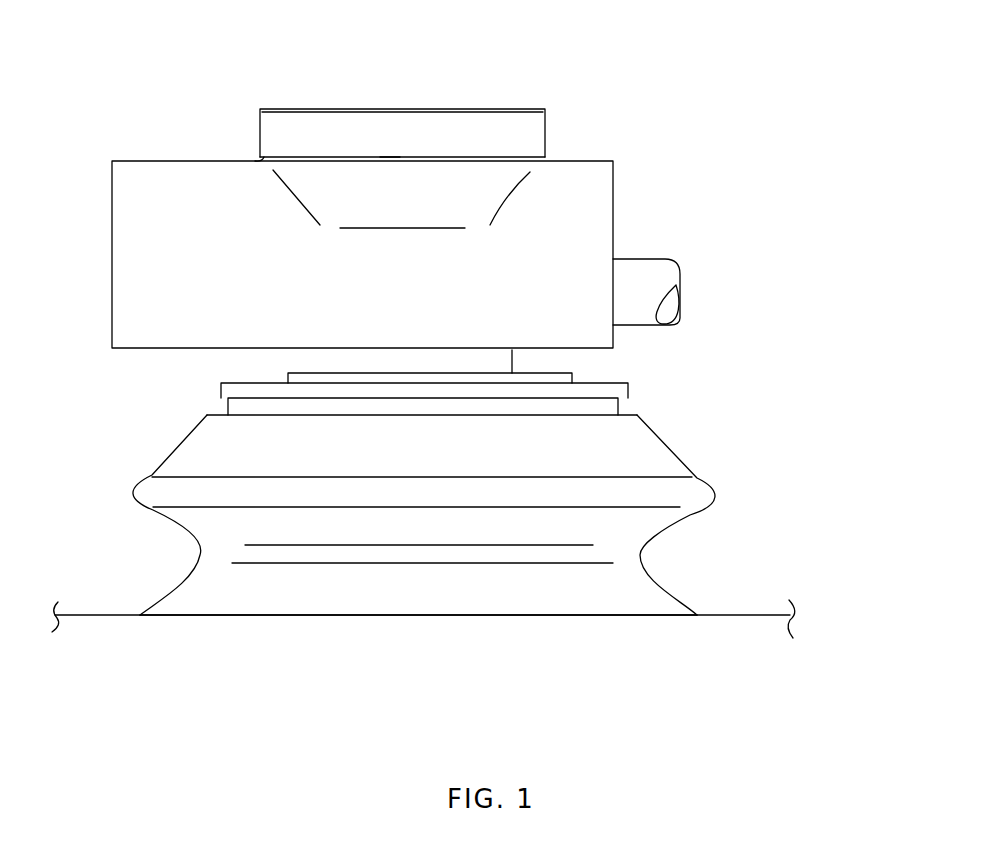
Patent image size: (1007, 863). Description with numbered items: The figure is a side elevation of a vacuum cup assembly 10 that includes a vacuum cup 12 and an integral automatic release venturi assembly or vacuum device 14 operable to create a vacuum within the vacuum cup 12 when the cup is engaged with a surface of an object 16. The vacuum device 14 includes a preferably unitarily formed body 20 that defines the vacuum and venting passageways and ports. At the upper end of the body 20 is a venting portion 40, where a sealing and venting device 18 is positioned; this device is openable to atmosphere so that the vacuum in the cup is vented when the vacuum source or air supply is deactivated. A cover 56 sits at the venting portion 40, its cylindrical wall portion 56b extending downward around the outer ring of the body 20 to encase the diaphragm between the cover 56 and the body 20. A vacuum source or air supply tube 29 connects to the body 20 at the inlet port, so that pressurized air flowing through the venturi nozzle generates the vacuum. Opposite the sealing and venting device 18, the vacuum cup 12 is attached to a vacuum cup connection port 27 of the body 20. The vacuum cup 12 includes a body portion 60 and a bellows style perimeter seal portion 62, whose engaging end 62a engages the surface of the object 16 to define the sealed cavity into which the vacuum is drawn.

The vacuum cup assembly 10 is at (614, 78).
The vacuum cup 12 is at (690, 443).
The vacuum device 14 is at (155, 150).
The object 16 is at (90, 617).
The sealing and venting device 18 is at (428, 97).
The body portion 20 is at (570, 172).
The vacuum cup connection port 27 is at (500, 360).
The air supply tube 29 is at (645, 262).
The venting portion 40 is at (252, 150).
The cover 56 is at (475, 105).
The cylindrical wall portion 56b is at (393, 153).
The body portion 60 is at (230, 405).
The perimeter seal portion 62 is at (187, 512).
The engaging end 62a is at (410, 620).